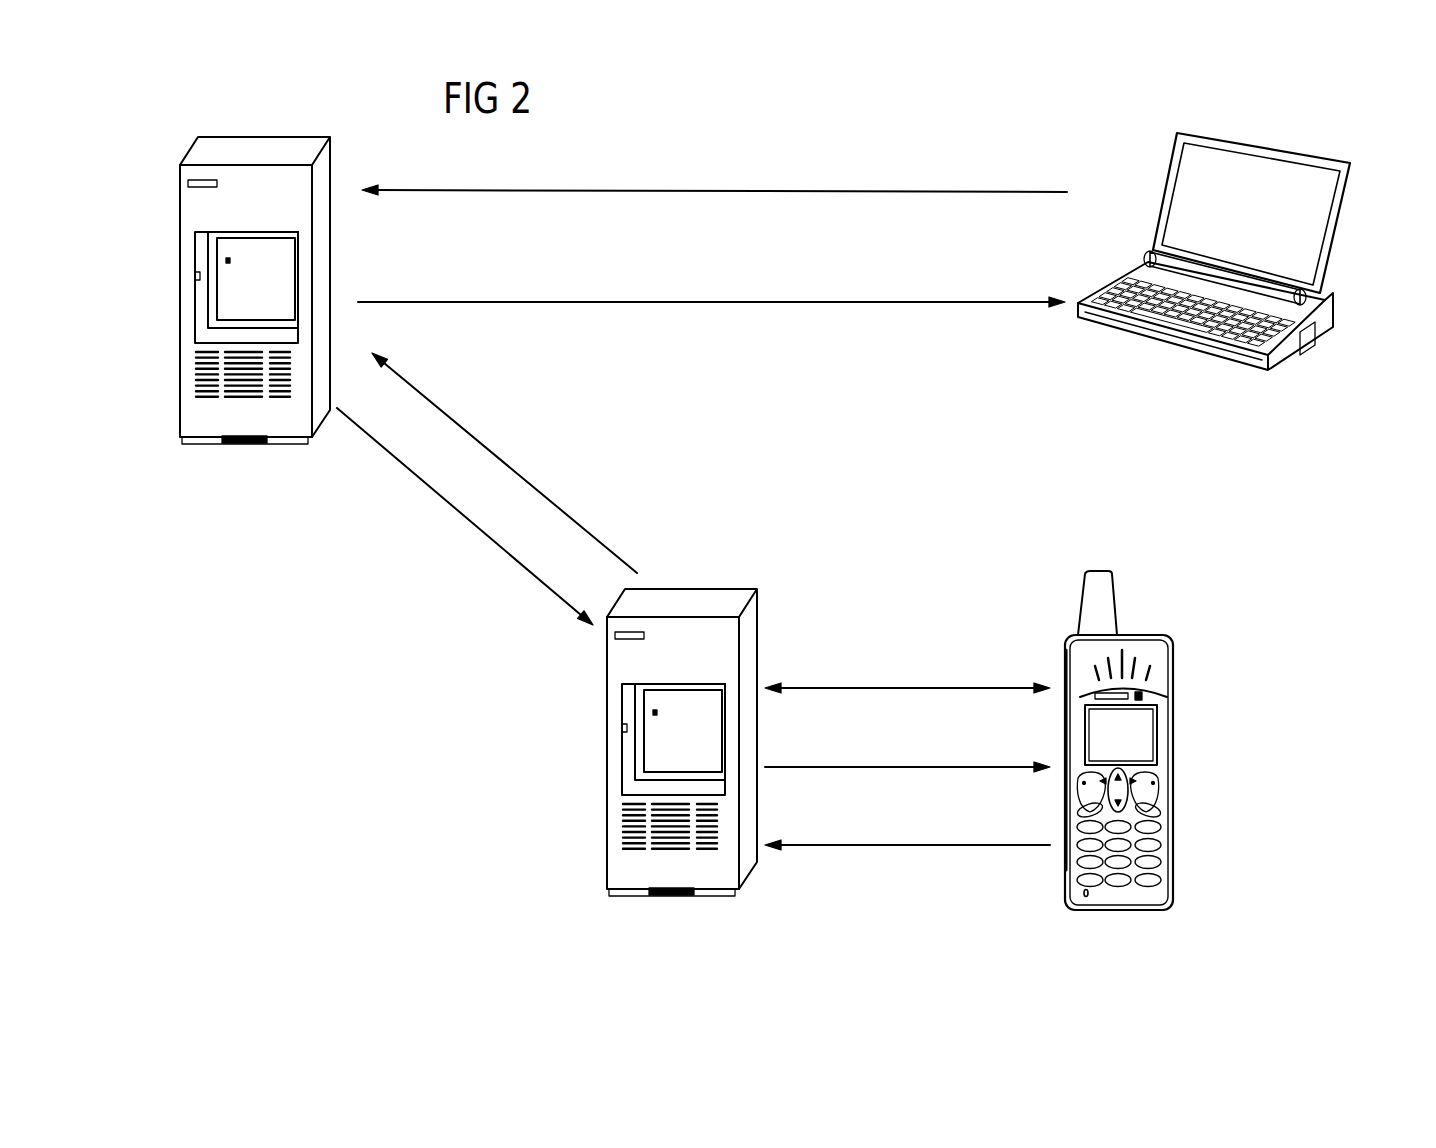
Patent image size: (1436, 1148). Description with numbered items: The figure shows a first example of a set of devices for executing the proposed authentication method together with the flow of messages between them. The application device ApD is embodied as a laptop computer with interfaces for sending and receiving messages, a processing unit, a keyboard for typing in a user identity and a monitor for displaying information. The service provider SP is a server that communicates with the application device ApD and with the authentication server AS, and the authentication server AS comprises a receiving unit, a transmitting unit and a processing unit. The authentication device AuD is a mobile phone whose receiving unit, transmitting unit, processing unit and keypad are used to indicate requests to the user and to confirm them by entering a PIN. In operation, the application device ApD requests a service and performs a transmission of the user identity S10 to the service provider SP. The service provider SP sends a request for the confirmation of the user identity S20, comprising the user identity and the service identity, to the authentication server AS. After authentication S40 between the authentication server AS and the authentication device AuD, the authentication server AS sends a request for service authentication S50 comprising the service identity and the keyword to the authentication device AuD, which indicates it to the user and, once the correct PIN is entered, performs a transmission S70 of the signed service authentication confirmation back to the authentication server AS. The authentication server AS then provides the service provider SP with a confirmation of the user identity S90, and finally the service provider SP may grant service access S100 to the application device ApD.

The service provider SP is at (244, 440).
The authentication server AS is at (606, 775).
The application device ApD is at (1315, 353).
The authentication device AuD is at (1173, 770).
The transmission of the user identity S10 is at (873, 190).
The grant of service access S100 is at (812, 300).
The request for the confirmation of the user identity S20 is at (452, 507).
The confirmation of the user identity S90 is at (488, 447).
The authentication S40 is at (860, 687).
The request for service authentication S50 is at (893, 766).
The transmission of the service authentication confirmation S70 is at (930, 844).